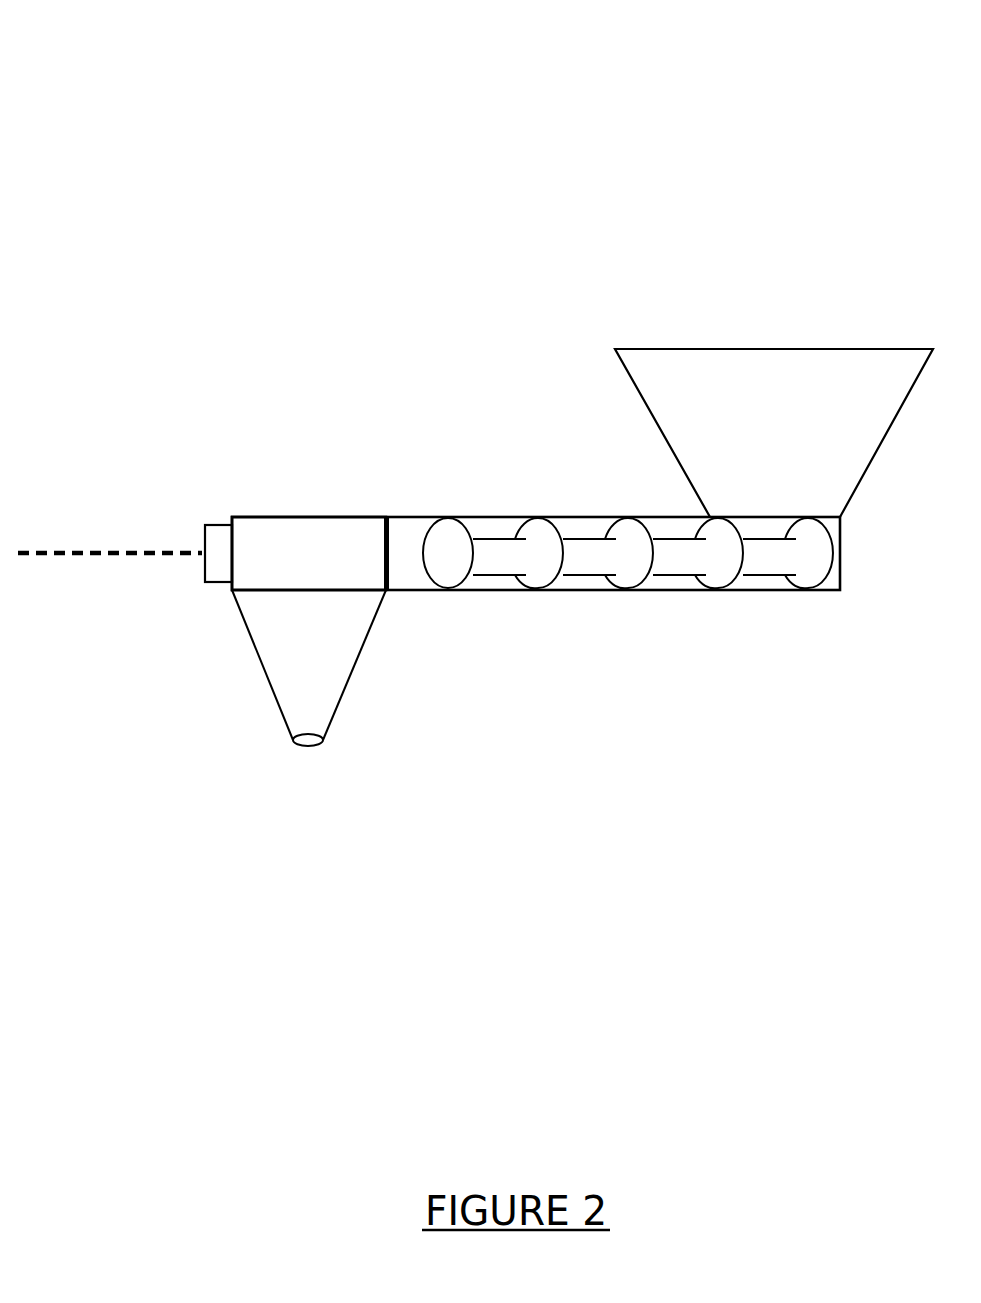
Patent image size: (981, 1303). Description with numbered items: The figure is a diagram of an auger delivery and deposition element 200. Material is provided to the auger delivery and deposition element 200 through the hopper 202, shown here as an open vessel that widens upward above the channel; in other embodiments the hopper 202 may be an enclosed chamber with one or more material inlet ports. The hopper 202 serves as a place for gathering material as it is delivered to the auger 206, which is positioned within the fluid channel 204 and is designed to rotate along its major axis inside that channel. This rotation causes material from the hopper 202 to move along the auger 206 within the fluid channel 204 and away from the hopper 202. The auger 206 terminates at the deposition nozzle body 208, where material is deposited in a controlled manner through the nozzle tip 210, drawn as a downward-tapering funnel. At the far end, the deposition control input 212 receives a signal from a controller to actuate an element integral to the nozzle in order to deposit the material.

The auger delivery and deposition element 200 is at (198, 87).
The hopper 202 is at (798, 362).
The fluid channel 204 is at (568, 523).
The auger 206 is at (625, 557).
The deposition nozzle body 208 is at (362, 540).
The nozzle tip 210 is at (288, 658).
The deposition control input 212 is at (207, 523).